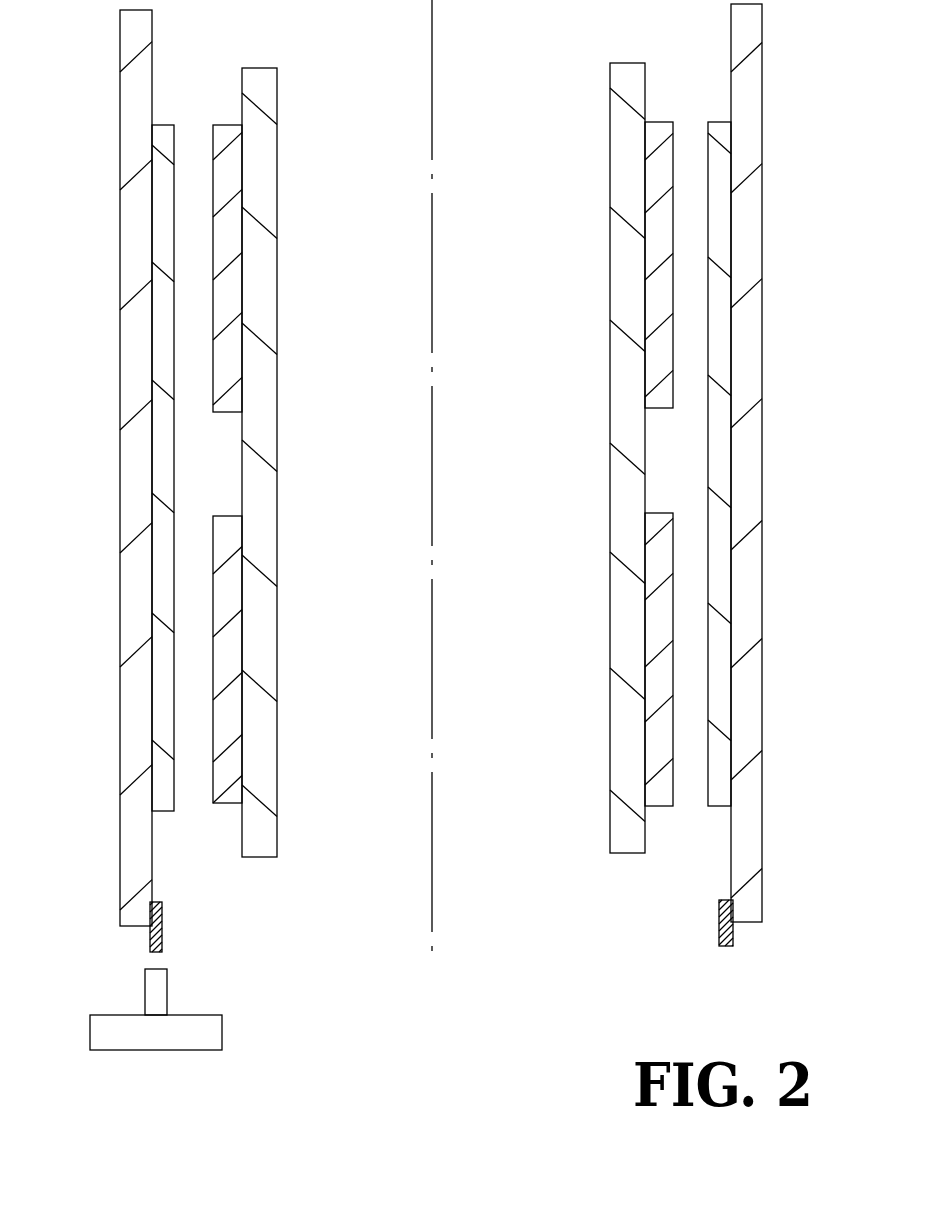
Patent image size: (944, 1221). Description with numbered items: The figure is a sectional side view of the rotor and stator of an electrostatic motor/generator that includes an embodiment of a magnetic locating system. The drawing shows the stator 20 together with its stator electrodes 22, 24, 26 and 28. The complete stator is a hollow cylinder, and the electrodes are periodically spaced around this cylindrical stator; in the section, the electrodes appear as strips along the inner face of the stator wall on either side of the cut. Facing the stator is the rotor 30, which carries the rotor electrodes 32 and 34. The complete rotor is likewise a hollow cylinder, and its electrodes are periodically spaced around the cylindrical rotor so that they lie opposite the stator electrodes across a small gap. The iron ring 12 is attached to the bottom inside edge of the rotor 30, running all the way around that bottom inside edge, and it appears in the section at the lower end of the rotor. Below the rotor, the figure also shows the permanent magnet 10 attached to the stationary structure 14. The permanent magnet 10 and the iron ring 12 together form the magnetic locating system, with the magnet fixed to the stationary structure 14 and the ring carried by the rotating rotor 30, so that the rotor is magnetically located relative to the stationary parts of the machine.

The rotor 30 is at (120, 140).
The rotor electrode 32 is at (178, 452).
The stator electrode 22 is at (209, 272).
The stator electrode 24 is at (199, 655).
The stator 20 is at (277, 135).
The iron ring 12 is at (162, 920).
The permanent magnet 10 is at (167, 1000).
The stationary structure 14 is at (222, 1032).
The stator electrode 26 is at (676, 260).
The stator electrode 28 is at (680, 654).
The rotor electrode 34 is at (697, 459).